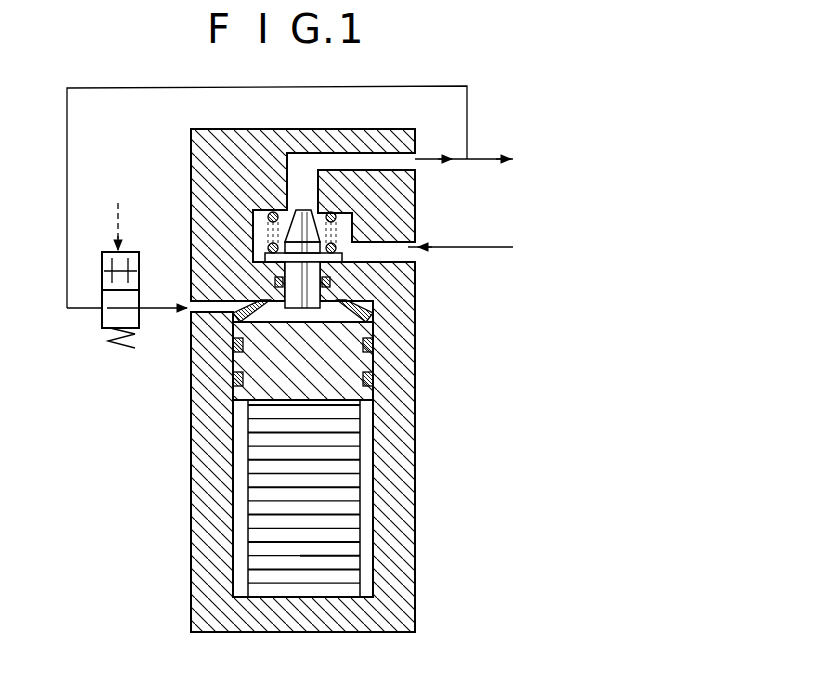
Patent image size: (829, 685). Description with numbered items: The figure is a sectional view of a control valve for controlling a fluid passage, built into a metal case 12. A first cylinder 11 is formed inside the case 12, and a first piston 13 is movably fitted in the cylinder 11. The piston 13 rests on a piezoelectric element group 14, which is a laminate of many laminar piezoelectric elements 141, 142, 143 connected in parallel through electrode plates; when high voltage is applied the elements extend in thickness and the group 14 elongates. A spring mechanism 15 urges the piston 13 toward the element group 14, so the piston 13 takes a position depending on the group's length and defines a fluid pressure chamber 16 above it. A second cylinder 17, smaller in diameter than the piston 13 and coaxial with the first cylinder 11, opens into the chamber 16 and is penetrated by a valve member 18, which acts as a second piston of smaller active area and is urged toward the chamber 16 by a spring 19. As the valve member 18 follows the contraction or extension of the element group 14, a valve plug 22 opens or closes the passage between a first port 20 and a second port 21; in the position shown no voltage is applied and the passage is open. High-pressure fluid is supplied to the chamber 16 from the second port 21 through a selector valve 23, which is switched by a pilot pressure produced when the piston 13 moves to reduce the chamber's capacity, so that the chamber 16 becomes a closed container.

The first cylinder 11 is at (366, 423).
The case 12 is at (203, 448).
The first piston 13 is at (355, 366).
The piezoelectric element group 14 is at (372, 507).
The spring mechanism 15 is at (238, 312).
The fluid pressure chamber 16 is at (348, 318).
The second cylinder 17 is at (316, 294).
The valve member 18 is at (292, 268).
The spring 19 is at (336, 228).
The first port 20 is at (410, 250).
The second port 21 is at (405, 159).
The valve plug 22 is at (302, 222).
The selector valve 23 is at (102, 316).
The laminar piezoelectric element 141 is at (357, 588).
The laminar piezoelectric element 142 is at (355, 575).
The spring coil portion 143 is at (258, 560).